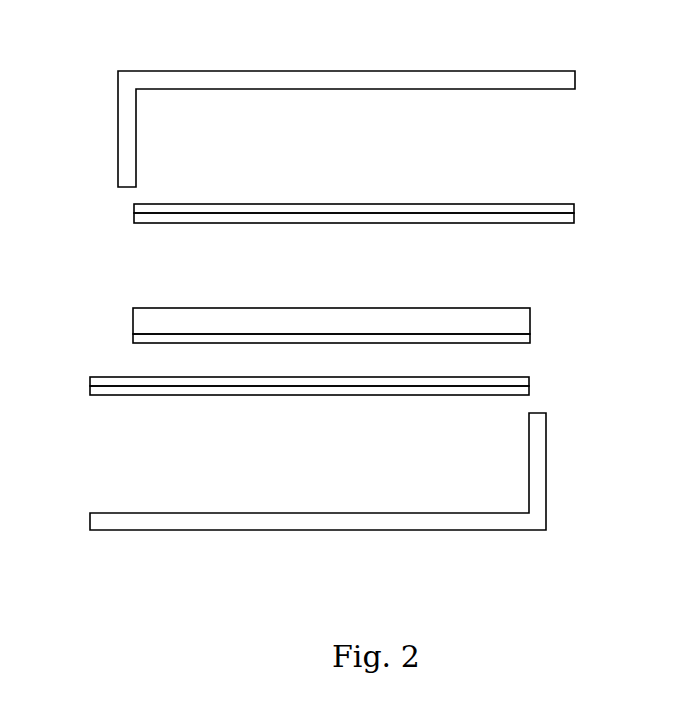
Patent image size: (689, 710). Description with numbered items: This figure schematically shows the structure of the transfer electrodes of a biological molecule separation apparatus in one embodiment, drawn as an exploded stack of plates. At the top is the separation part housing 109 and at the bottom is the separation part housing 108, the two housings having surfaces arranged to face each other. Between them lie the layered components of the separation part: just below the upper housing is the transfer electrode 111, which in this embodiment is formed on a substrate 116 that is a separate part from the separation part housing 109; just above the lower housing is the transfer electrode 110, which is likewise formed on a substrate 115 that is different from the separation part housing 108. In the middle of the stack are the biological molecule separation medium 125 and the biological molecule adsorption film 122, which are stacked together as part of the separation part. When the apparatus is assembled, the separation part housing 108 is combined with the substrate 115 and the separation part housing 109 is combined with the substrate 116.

The separation part housing 108 is at (320, 522).
The separation part housing 109 is at (349, 80).
The transfer electrode 110 is at (97, 381).
The transfer electrode 111 is at (565, 217).
The substrate 115 is at (97, 390).
The substrate 116 is at (565, 210).
The biological molecule adsorption film 122 is at (522, 339).
The biological molecule separation medium 125 is at (522, 323).